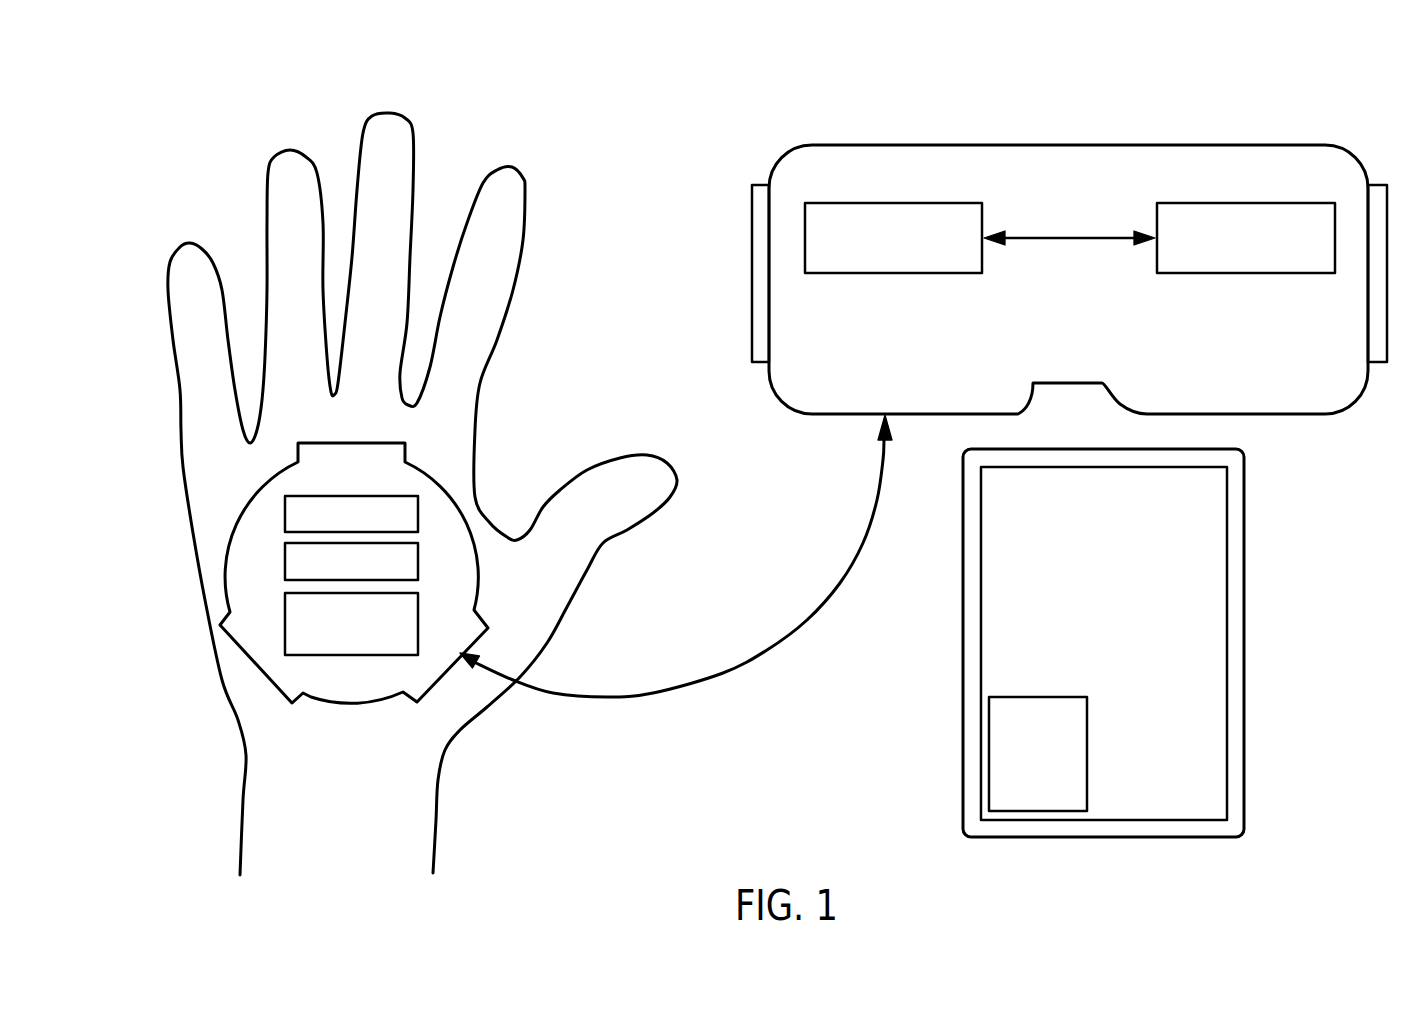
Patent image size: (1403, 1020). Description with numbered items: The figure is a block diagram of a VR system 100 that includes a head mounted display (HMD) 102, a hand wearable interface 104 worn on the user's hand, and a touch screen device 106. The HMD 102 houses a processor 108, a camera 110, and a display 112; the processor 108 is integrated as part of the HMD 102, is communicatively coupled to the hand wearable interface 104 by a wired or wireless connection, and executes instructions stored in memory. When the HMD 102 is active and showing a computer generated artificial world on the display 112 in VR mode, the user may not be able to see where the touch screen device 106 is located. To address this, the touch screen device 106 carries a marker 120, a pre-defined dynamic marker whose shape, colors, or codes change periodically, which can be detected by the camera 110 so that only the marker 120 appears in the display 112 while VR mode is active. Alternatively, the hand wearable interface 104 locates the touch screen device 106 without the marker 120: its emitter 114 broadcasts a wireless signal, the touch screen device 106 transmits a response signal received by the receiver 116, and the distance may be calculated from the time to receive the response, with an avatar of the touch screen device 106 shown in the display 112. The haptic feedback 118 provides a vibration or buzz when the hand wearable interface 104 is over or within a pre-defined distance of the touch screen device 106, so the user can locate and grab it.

The VR system 100 is at (169, 54).
The head mounted display (HMD) 102 is at (1147, 145).
The hand wearable interface 104 is at (354, 441).
The touch screen device 106 is at (1244, 602).
The processor 108 is at (876, 264).
The camera 110 is at (1229, 264).
The display 112 is at (1052, 349).
The emitter 114 is at (418, 515).
The receiver 116 is at (418, 563).
The haptic feedback 118 is at (418, 625).
The marker 120 is at (1021, 764).